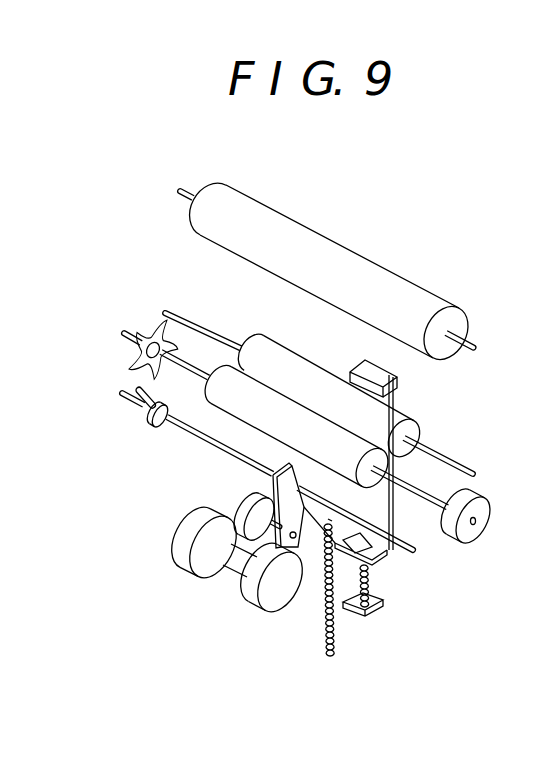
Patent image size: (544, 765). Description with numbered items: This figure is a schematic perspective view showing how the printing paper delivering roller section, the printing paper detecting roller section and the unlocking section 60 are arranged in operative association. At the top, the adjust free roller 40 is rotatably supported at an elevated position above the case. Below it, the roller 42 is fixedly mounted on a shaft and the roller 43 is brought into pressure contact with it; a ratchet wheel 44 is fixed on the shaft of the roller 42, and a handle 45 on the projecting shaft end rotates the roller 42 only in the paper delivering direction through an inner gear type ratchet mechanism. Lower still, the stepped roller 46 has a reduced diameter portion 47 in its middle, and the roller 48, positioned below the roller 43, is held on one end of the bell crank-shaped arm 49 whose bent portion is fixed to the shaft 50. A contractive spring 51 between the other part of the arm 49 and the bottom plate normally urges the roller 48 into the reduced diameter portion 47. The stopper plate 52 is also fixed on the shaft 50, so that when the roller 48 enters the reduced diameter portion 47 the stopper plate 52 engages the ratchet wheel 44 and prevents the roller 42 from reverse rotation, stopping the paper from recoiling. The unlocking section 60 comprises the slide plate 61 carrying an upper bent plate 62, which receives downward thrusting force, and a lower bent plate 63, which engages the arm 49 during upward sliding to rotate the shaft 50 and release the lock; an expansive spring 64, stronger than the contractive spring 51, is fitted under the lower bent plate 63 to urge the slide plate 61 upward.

The adjust free roller 40 is at (312, 269).
The roller 42 is at (284, 422).
The roller 43 is at (310, 389).
The ratchet wheel 44 is at (152, 314).
The handle 45 is at (478, 527).
The stepped roller 46 is at (180, 550).
The reduced diameter portion 47 is at (233, 567).
The roller 48 is at (243, 507).
The bell crank-shaped arm 49 is at (327, 451).
The shaft 50 is at (192, 433).
The contractive spring 51 is at (322, 624).
The stopper plate 52 is at (138, 397).
The unlocking section 60 is at (406, 400).
The slide plate 61 is at (393, 508).
The bent plate 62 is at (365, 360).
The bent plate 63 is at (385, 563).
The expansive spring 64 is at (380, 584).